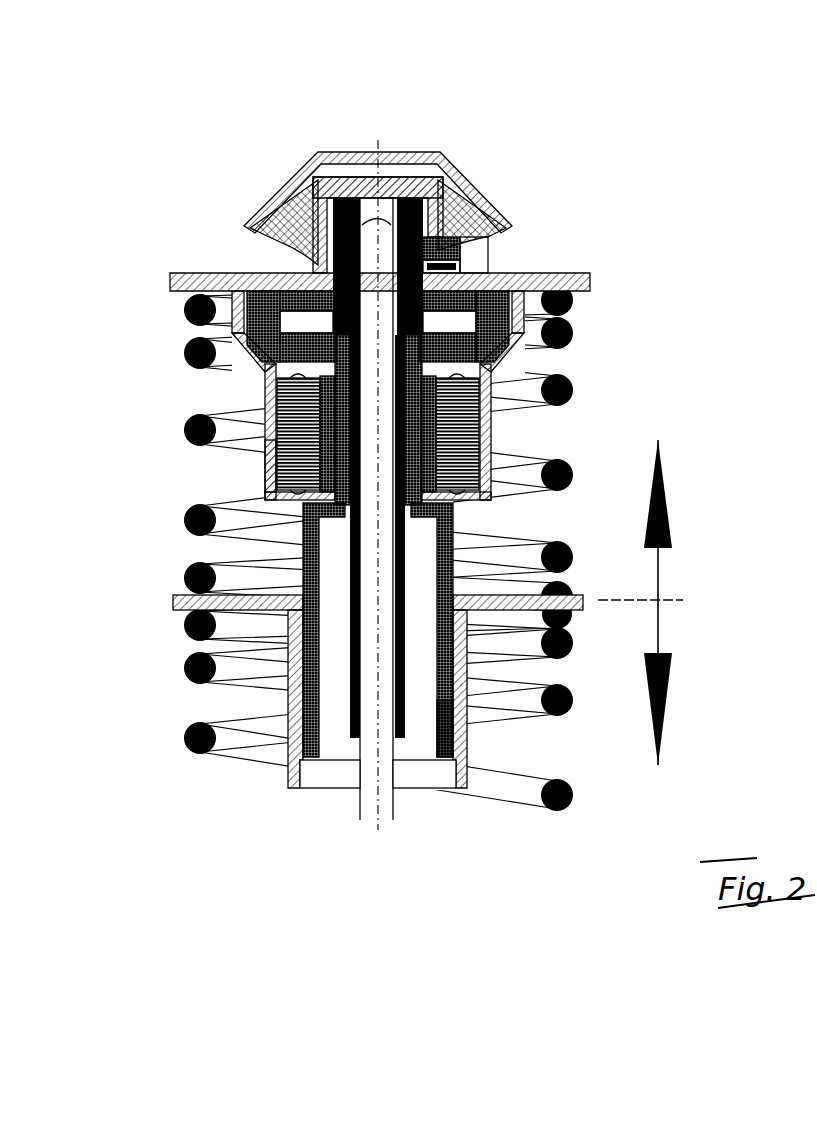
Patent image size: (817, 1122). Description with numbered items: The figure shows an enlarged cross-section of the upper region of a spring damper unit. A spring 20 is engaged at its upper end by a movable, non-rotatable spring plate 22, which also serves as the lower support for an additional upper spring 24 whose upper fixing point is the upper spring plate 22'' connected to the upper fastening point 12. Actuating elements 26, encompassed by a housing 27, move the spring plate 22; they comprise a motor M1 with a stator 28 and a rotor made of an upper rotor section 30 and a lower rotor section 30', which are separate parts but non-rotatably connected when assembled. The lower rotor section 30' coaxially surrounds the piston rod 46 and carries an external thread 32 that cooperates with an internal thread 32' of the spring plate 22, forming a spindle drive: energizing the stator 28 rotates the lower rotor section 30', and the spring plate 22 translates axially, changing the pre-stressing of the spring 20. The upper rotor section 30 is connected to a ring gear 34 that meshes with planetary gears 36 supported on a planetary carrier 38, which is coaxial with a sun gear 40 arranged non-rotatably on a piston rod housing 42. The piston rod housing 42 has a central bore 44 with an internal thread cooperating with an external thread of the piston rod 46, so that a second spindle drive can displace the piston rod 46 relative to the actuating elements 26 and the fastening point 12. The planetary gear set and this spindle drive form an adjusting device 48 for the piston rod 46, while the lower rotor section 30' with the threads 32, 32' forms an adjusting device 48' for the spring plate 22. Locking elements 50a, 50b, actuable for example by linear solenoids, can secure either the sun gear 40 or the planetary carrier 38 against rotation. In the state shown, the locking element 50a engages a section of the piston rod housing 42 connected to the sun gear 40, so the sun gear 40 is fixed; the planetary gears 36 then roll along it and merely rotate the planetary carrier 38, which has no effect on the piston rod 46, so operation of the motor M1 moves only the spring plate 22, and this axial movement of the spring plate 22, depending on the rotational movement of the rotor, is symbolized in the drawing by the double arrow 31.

The upper fastening point 12 is at (462, 172).
The spring 20 is at (183, 740).
The spring plate 22 is at (344, 597).
The upper spring plate 22'' is at (413, 269).
The upper spring 24 is at (183, 352).
The actuating elements 26 is at (600, 357).
The housing 27 is at (267, 470).
The stator 28 is at (293, 412).
The upper rotor section 30 is at (244, 415).
The lower rotor section 30' is at (280, 630).
The axial direction 31 is at (660, 627).
The external thread 32 is at (377, 740).
The internal thread 32' is at (485, 787).
The ring gear 34 is at (298, 323).
The planetary gears 36 is at (270, 313).
The planetary carrier 38 is at (257, 238).
The sun gear 40 is at (432, 323).
The piston rod housing 42 is at (333, 212).
The central bore 44 is at (392, 232).
The piston rod 46 is at (357, 808).
The adjusting device 48 is at (271, 155).
The adjusting device 48' is at (153, 485).
The locking element 50a is at (453, 243).
The locking element 50b is at (470, 248).
The motor M1 is at (540, 430).